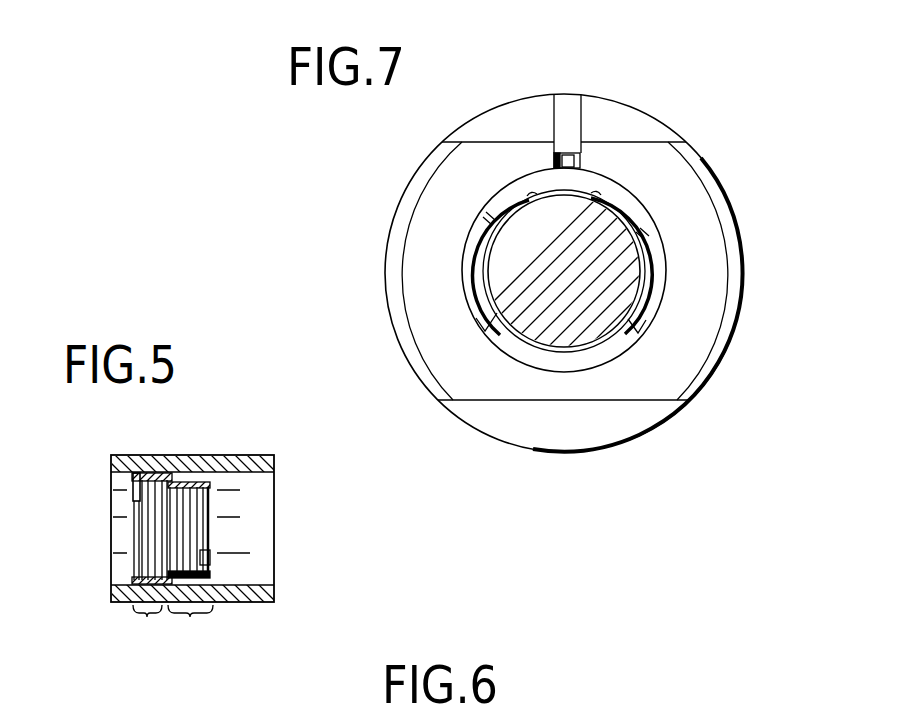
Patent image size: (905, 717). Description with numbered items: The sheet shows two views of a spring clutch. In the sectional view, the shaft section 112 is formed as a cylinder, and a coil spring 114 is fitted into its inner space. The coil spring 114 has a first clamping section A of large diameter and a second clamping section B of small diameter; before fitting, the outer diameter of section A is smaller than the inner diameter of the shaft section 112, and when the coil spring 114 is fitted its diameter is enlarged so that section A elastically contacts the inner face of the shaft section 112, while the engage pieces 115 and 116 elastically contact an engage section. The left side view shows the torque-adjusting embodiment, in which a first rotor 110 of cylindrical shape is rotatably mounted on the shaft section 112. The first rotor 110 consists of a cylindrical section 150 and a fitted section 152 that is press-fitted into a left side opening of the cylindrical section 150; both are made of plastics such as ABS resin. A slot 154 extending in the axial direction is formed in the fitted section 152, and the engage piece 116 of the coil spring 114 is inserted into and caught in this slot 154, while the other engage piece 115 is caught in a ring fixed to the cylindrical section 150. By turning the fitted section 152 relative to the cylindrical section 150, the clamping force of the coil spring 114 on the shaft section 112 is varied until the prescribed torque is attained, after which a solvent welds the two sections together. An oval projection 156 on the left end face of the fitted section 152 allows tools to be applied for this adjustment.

In FIG. 7, the first rotor 110 is at (378, 252).
In FIG. 7, the shaft section 112 is at (612, 288).
In FIG. 5, the shaft section 112 is at (275, 455).
In FIG. 5, the coil spring 114 is at (160, 565).
In FIG. 5, the engage piece 115 is at (133, 480).
In FIG. 7, the engage piece 116 is at (576, 158).
In FIG. 5, the engage piece 116 is at (207, 562).
In FIG. 7, the cylindrical section 150 is at (570, 128).
In FIG. 7, the fitted section 152 is at (657, 128).
In FIG. 7, the slot 154 is at (567, 128).
In FIG. 7, the oval projection 156 is at (645, 400).